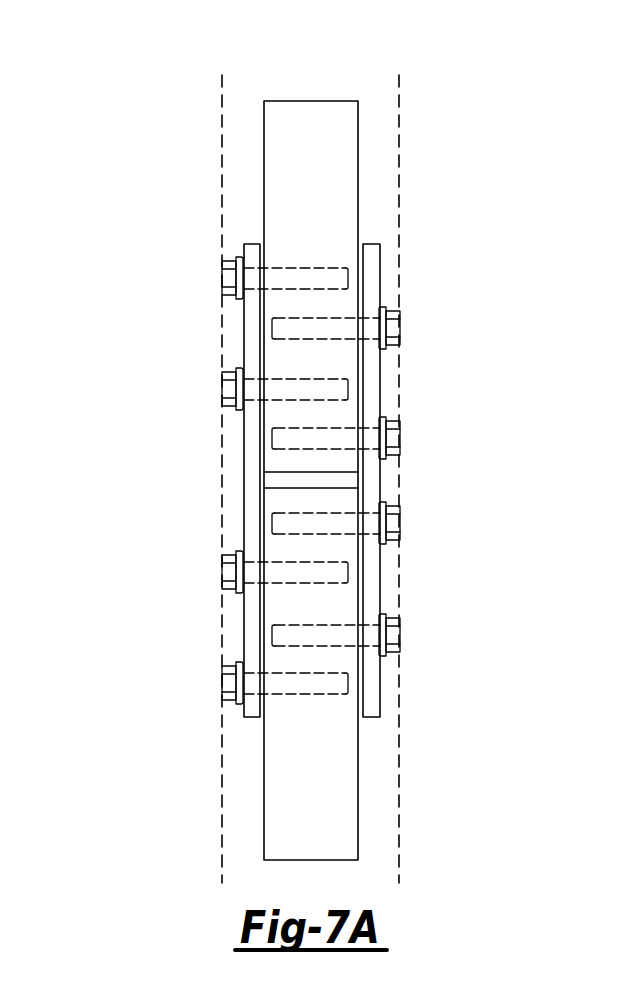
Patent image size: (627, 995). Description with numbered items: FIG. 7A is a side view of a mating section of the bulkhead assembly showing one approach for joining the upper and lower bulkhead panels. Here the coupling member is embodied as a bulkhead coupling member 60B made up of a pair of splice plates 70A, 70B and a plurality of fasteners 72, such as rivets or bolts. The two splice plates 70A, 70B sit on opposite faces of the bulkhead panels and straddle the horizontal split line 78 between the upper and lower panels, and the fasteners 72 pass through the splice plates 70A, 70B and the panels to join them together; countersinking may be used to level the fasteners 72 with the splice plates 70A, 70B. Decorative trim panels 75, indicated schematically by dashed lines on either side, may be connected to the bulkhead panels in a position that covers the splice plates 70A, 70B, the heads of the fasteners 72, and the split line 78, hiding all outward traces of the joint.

The bulkhead coupling member 60B is at (443, 120).
The splice plate 70A is at (248, 449).
The splice plate 70B is at (372, 397).
The fasteners 72 is at (230, 278).
The decorative trim panels 75 is at (222, 752).
The horizontal split line 78 is at (273, 480).